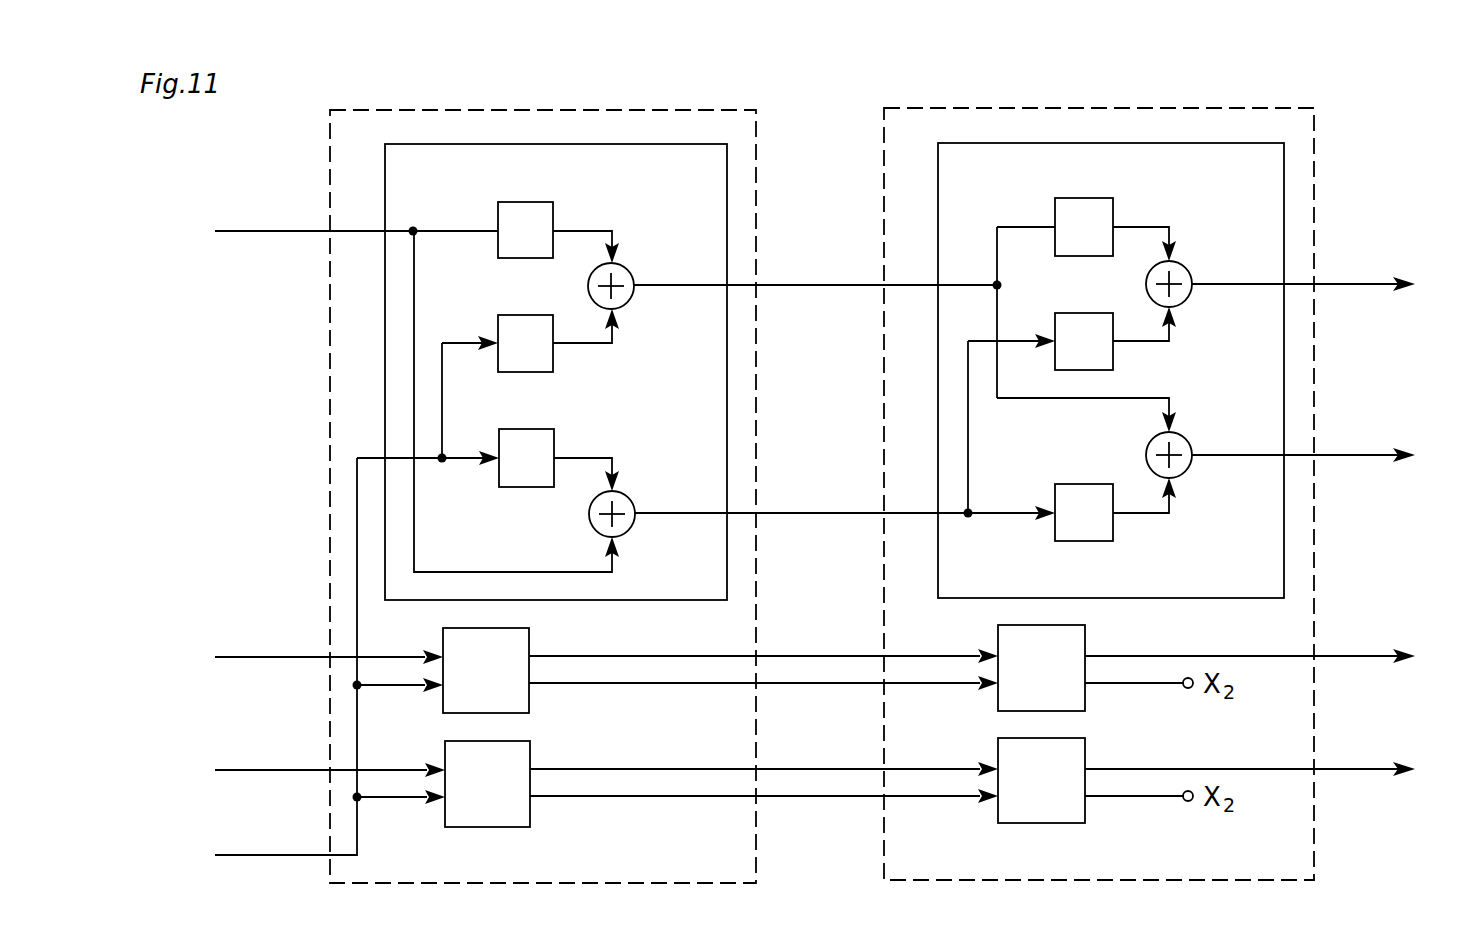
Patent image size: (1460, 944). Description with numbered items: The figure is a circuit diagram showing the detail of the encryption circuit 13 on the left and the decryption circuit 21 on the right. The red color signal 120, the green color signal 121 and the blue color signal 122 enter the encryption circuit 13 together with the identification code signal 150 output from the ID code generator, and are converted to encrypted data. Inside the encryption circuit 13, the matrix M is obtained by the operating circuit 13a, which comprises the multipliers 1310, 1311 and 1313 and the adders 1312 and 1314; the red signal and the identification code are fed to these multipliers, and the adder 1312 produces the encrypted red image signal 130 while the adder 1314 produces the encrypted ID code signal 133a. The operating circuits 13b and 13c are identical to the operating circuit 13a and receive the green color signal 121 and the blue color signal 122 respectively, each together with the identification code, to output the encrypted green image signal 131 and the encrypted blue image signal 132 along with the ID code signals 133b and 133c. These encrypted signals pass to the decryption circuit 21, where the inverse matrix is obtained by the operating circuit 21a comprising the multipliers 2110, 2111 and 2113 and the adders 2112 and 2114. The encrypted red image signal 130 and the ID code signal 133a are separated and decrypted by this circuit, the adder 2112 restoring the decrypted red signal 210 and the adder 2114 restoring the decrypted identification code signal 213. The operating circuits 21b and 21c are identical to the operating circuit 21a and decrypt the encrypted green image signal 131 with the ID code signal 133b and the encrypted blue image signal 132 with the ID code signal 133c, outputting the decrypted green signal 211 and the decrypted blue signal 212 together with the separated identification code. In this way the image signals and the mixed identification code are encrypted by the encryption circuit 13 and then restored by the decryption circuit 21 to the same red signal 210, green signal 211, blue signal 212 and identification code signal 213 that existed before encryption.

The encryption circuit 13 is at (570, 110).
The operating circuit 13a is at (575, 600).
The operating circuit 13b is at (530, 702).
The operating circuit 13c is at (530, 815).
The output signal R2 120 is at (260, 231).
The output signal G2 121 is at (266, 657).
The output signal B2 122 is at (270, 770).
The identification code signal X2 150 is at (270, 855).
The multiplier 1310 is at (553, 218).
The multiplier 1311 is at (498, 322).
The adder 1312 is at (636, 297).
The multiplier 1313 is at (554, 438).
The adder 1314 is at (589, 514).
The image signal R3 130 is at (816, 285).
The image signal G3 131 is at (826, 656).
The image signal B3 132 is at (868, 748).
The ID code signal X3 133a is at (816, 513).
The ID code signal 133b is at (790, 686).
The ID code signal 133c is at (790, 799).
The decryption circuit 21 is at (1128, 108).
The operating circuit 21a is at (1135, 598).
The operating circuit 21b is at (1085, 697).
The operating circuit 21c is at (1085, 810).
The multiplier 2110 is at (1113, 216).
The multiplier 2111 is at (1113, 350).
The adder 2112 is at (1146, 284).
The multiplier 2113 is at (1113, 530).
The adder 2114 is at (1146, 455).
The decrypted signal R2 210 is at (1354, 284).
The decrypted signal G2 211 is at (1358, 656).
The decrypted signal B2 212 is at (1358, 769).
The decrypted signal X2 213 is at (1354, 455).